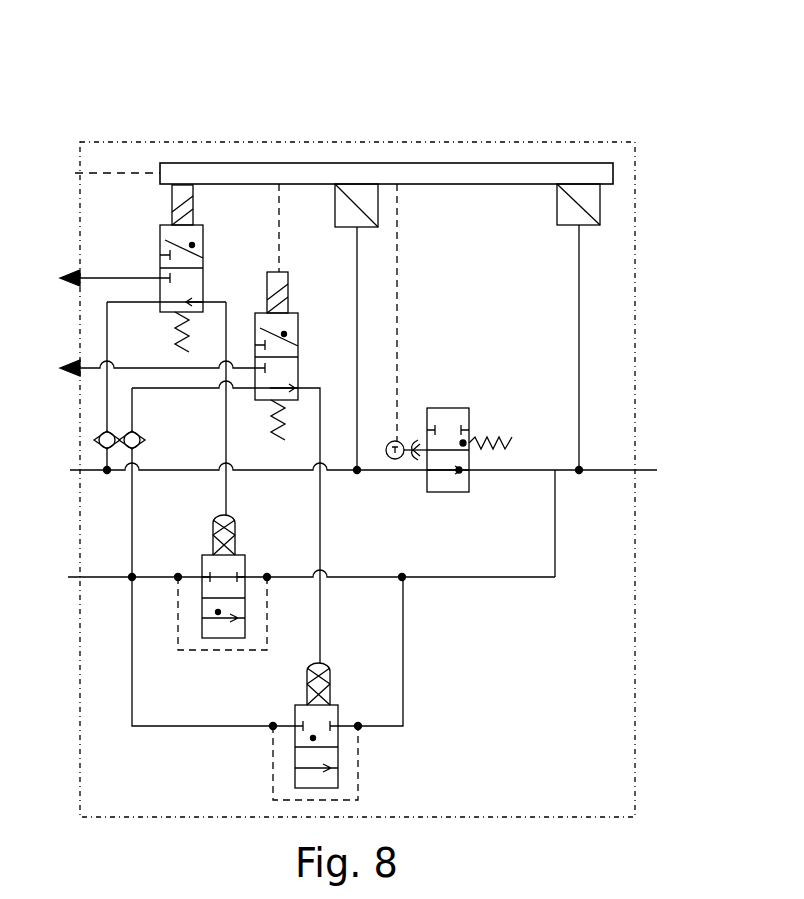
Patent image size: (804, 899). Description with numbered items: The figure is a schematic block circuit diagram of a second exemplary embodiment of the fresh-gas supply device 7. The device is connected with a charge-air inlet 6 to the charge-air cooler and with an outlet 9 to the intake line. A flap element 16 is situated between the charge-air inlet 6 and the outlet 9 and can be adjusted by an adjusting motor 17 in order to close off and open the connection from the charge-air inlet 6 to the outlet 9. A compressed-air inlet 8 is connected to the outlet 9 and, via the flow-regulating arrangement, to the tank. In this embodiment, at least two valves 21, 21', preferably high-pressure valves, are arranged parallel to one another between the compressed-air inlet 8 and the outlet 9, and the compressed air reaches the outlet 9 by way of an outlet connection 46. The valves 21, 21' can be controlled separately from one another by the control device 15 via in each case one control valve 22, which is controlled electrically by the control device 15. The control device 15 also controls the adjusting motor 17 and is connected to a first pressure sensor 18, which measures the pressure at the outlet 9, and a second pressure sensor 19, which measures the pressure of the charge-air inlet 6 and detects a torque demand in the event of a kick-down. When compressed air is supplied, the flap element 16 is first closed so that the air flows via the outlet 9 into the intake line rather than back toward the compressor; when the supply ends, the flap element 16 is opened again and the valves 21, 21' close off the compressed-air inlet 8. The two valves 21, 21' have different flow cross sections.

The fresh-gas supply device 7 is at (267, 100).
The control device 15 is at (225, 175).
The second pressure sensor 19 is at (362, 198).
The first pressure sensor 18 is at (576, 196).
The adjusting motor 17 is at (401, 442).
The flap element 16 is at (470, 443).
The control valve 22 is at (284, 334).
The charge-air inlet 6 is at (80, 468).
The outlet 9 is at (640, 470).
The compressed-air inlet 8 is at (78, 575).
The outlet connection 46 is at (555, 522).
The valve 21 is at (152, 623).
The valve 21' is at (218, 688).